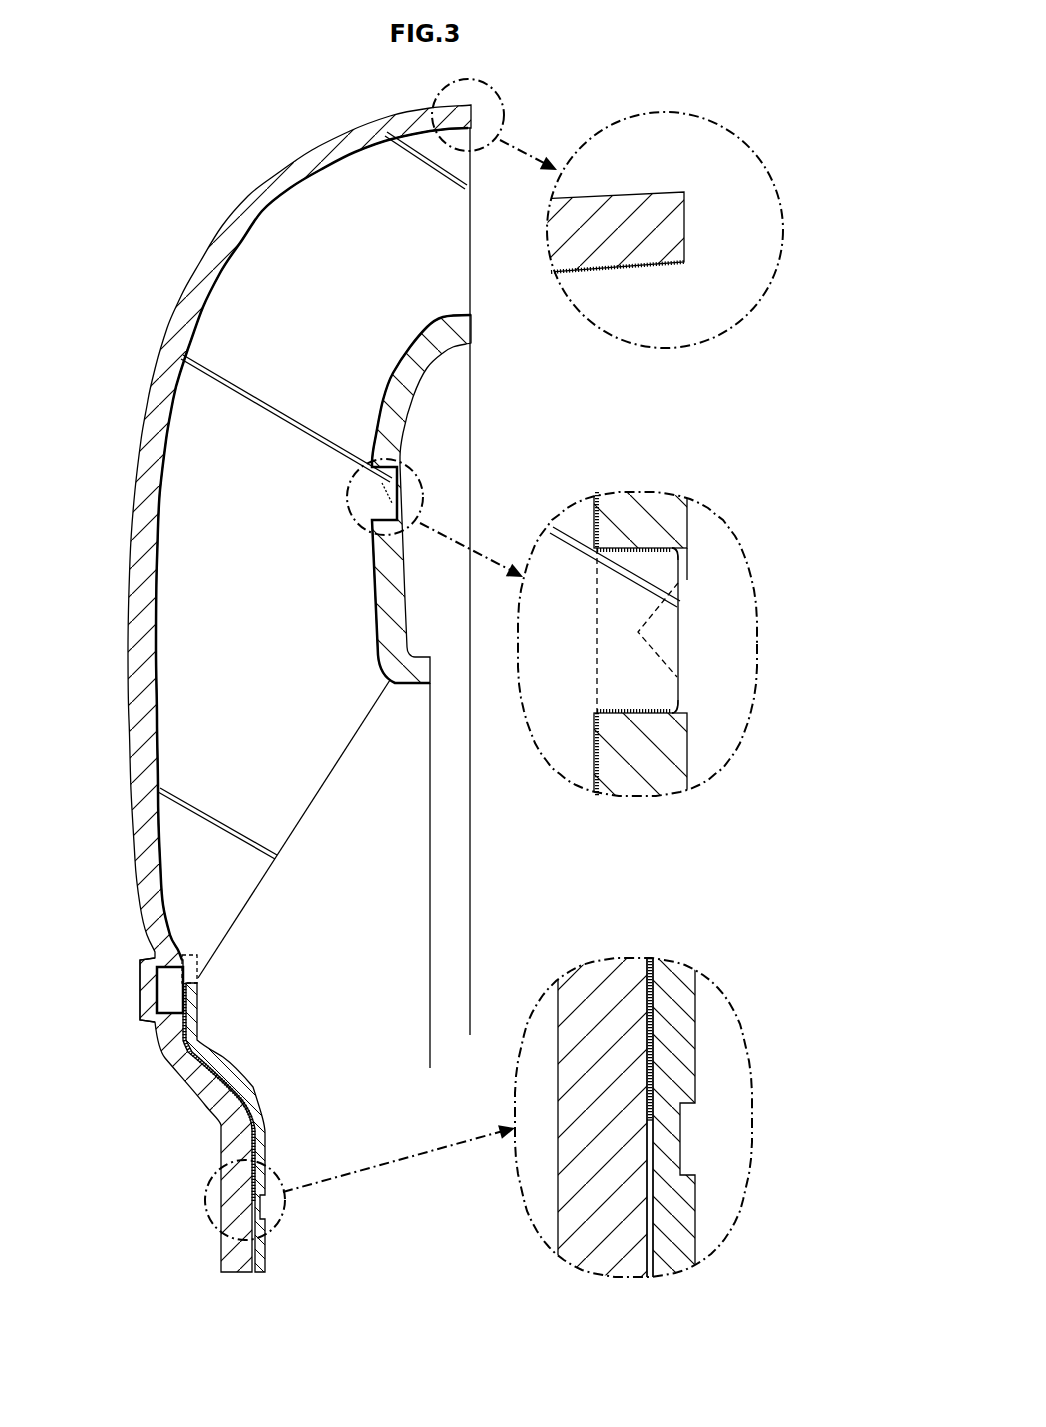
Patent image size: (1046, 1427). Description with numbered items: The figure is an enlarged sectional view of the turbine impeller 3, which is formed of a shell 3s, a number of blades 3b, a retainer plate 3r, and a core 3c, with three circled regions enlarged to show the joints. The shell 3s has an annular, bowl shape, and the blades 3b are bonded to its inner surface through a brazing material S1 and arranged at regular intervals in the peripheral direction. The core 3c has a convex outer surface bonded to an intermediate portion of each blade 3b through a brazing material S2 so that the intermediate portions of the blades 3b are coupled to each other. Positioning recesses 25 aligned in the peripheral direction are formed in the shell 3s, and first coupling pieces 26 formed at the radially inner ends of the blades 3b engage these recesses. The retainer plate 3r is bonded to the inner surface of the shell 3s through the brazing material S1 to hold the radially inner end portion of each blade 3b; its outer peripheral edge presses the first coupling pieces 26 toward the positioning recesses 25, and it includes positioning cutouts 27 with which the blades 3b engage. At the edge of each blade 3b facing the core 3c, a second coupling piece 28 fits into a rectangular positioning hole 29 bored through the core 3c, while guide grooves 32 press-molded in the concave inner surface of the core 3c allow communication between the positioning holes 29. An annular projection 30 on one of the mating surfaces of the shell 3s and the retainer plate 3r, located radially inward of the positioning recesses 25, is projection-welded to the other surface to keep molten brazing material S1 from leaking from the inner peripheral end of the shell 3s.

The turbine impeller 3 is at (243, 197).
The shell 3s is at (150, 415).
The core 3c is at (395, 615).
The blades 3b is at (310, 758).
The retainer plate 3r is at (265, 1120).
The positioning recesses 25 is at (158, 950).
The first coupling pieces 26 is at (172, 1020).
The positioning cutouts 27 is at (197, 977).
The second coupling piece 28 is at (655, 580).
The positioning holes 29 is at (655, 707).
The annular projection 30 is at (647, 1137).
The guide grooves 32 is at (653, 622).
The brazing material S1 is at (608, 270).
The brazing material S2 is at (618, 708).